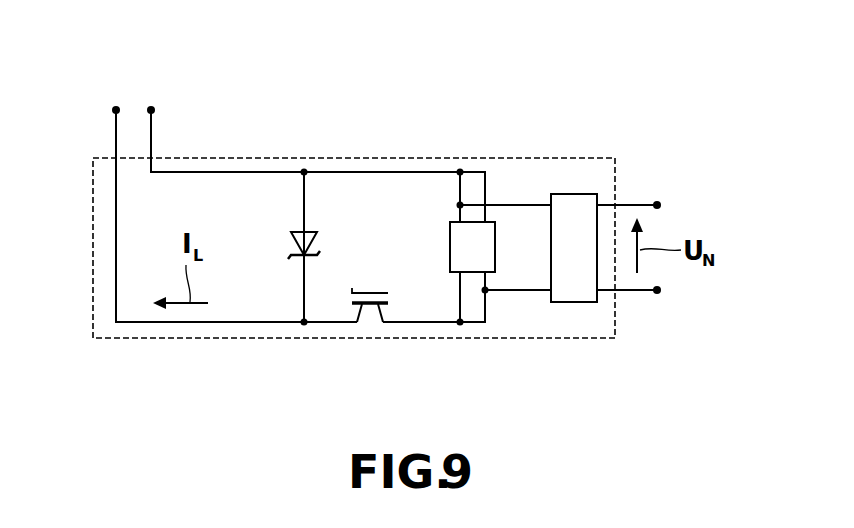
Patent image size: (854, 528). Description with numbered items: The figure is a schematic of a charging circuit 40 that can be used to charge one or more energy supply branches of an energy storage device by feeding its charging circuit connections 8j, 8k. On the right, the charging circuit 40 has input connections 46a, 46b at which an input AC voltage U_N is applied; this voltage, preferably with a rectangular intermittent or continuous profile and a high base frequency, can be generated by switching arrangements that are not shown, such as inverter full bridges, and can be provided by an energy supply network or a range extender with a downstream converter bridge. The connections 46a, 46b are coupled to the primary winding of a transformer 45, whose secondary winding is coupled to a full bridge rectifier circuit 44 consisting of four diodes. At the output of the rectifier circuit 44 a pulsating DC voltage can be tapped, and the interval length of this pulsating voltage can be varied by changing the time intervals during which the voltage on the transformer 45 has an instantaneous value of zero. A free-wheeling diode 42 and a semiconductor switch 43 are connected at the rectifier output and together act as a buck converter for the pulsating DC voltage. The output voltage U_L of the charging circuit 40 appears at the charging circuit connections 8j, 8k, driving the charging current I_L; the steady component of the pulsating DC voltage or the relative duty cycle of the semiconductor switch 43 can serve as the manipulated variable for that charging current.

The charging circuit connection 8j is at (116, 110).
The charging circuit connection 8k is at (151, 110).
The charging circuit 40 is at (352, 158).
The free-wheeling diode 42 is at (290, 238).
The semiconductor switch 43 is at (368, 318).
The full bridge rectifier circuit 44 is at (450, 229).
The transformer 45 is at (575, 194).
The input connection 46a is at (657, 290).
The input connection 46b is at (657, 205).